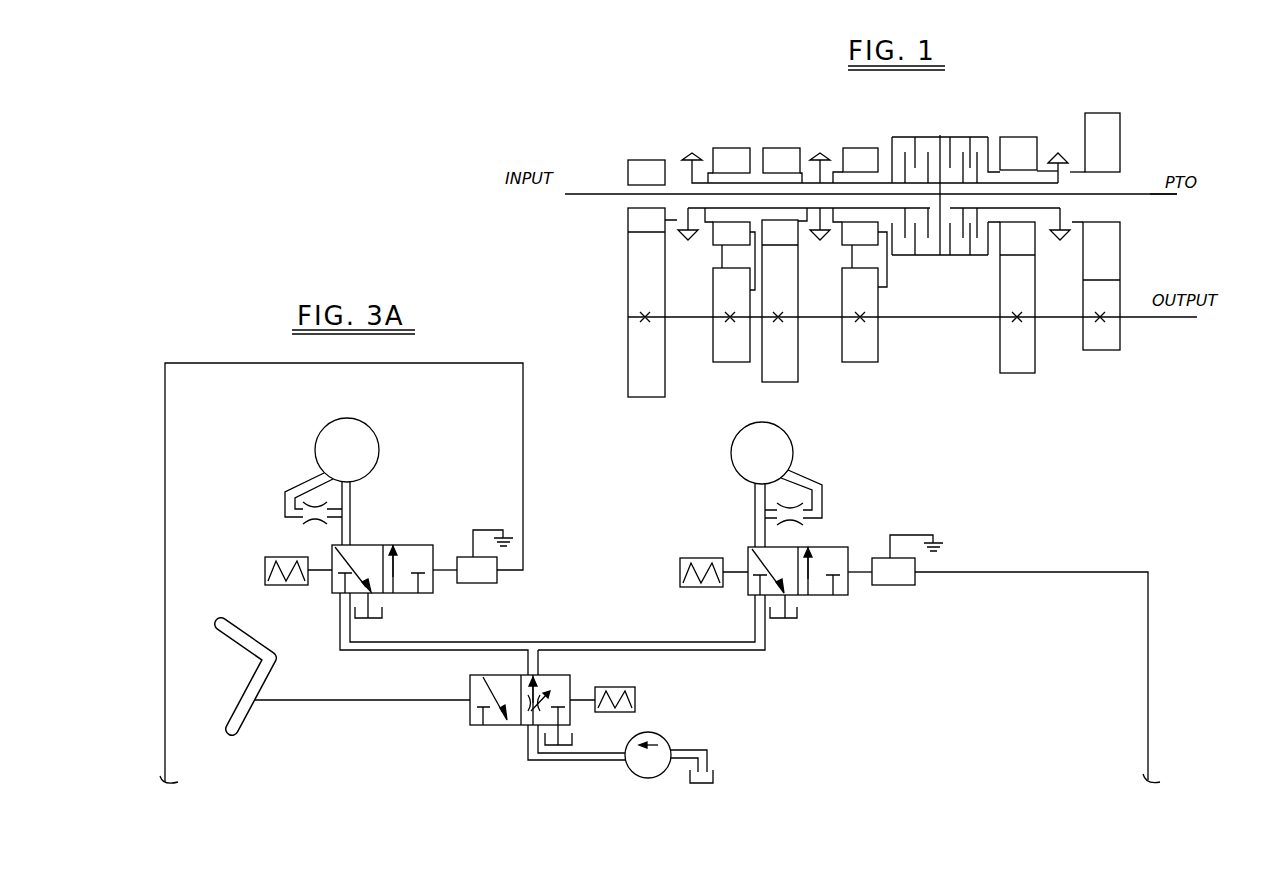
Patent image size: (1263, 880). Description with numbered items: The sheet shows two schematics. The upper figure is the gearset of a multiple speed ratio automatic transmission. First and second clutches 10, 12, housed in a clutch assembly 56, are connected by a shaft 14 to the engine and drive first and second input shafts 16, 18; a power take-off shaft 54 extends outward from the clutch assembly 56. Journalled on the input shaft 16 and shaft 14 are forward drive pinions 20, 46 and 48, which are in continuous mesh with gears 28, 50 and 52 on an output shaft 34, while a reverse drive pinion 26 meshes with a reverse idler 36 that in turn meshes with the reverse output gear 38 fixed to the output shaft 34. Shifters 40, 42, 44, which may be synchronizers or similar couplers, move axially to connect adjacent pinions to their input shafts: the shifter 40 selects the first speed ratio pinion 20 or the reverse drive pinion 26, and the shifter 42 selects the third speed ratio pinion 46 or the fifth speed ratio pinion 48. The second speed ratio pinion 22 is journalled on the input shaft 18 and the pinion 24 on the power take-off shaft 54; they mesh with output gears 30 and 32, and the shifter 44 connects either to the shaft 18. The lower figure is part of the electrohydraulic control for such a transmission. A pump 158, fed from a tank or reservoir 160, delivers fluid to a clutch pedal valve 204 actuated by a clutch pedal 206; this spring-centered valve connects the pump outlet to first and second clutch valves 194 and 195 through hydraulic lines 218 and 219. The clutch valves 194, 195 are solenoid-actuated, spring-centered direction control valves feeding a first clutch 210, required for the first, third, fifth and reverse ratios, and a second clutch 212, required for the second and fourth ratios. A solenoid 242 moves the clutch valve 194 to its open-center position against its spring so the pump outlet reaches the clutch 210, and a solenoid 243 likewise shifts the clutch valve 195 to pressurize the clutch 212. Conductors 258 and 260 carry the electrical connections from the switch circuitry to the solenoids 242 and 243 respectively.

In FIG. 1, the first clutch 10 is at (905, 257).
In FIG. 1, the second clutch 12 is at (960, 257).
In FIG. 1, the shaft 14 is at (592, 197).
In FIG. 1, the first input shaft 16 is at (708, 172).
In FIG. 1, the second input shaft 18 is at (1042, 172).
In FIG. 1, the first speed ratio pinion 20 is at (641, 168).
In FIG. 1, the second speed ratio pinion 22 is at (1015, 147).
In FIG. 1, the fifth speed ratio pinion 24 is at (1100, 123).
In FIG. 1, the reverse drive pinion 26 is at (727, 158).
In FIG. 1, the gear 28 is at (628, 360).
In FIG. 1, the output gear 30 is at (1000, 357).
In FIG. 1, the output gear 32 is at (1112, 335).
In FIG. 1, the output shaft 34 is at (1183, 318).
In FIG. 1, the reverse idler 36 is at (743, 262).
In FIG. 1, the reverse output gear 38 is at (718, 346).
In FIG. 1, the shifter 40 is at (694, 240).
In FIG. 1, the shifter 42 is at (823, 150).
In FIG. 1, the shifter 44 is at (1065, 240).
In FIG. 1, the third speed ratio pinion 46 is at (778, 160).
In FIG. 1, the fifth speed ratio pinion 48 is at (861, 153).
In FIG. 1, the gear 50 is at (798, 357).
In FIG. 1, the gear 52 is at (878, 342).
In FIG. 1, the power take-off shaft 54 is at (1157, 198).
In FIG. 1, the clutch assembly 56 is at (956, 126).
In FIG. 3A, the pump 158 is at (663, 736).
In FIG. 3A, the tank or reservoir 160 is at (366, 612).
In FIG. 3A, the first clutch valve 194 is at (409, 543).
In FIG. 3A, the second clutch valve 195 is at (833, 545).
In FIG. 3A, the clutch pedal valve 204 is at (470, 687).
In FIG. 3A, the clutch pedal 206 is at (258, 645).
In FIG. 3A, the first clutch 210 is at (377, 435).
In FIG. 3A, the second clutch 212 is at (798, 440).
In FIG. 3A, the hydraulic line 218 is at (418, 640).
In FIG. 3A, the hydraulic line 219 is at (600, 642).
In FIG. 3A, the solenoid 242 is at (482, 584).
In FIG. 3A, the solenoid 243 is at (896, 585).
In FIG. 3A, the conductor 258 is at (168, 546).
In FIG. 3A, the conductor 260 is at (1148, 700).